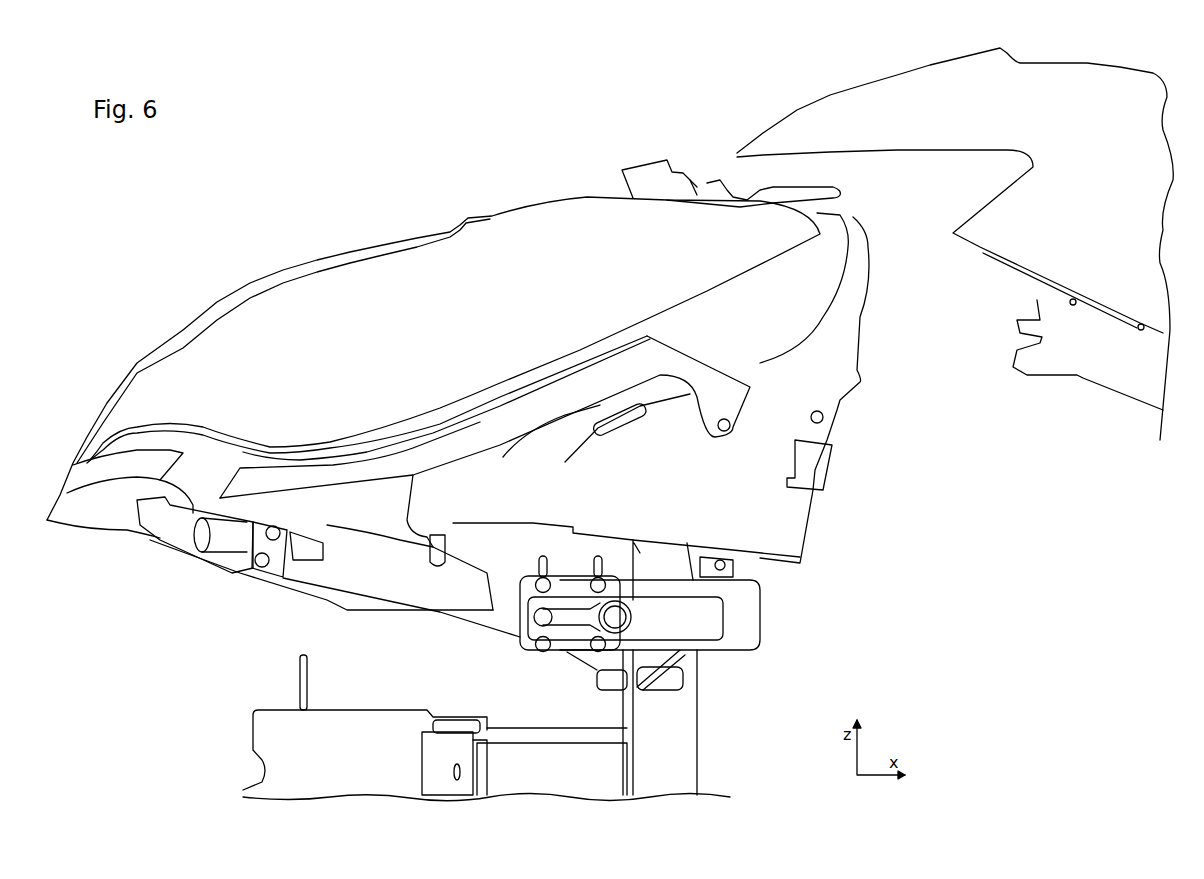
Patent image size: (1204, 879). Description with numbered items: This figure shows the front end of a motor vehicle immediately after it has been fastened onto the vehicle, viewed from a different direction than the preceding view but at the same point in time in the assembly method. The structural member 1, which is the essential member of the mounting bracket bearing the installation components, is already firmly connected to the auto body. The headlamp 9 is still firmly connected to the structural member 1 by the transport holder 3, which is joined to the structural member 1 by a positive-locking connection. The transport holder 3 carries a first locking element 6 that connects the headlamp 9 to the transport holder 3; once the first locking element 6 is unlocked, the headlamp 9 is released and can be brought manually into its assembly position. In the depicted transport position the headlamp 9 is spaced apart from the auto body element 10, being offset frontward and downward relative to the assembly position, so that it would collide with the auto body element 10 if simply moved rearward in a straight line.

The structural member 1 is at (550, 728).
The transport holder 3 is at (323, 600).
The first locking element 6 is at (253, 573).
The headlamp 9 is at (434, 334).
The auto body element 10 is at (1020, 120).